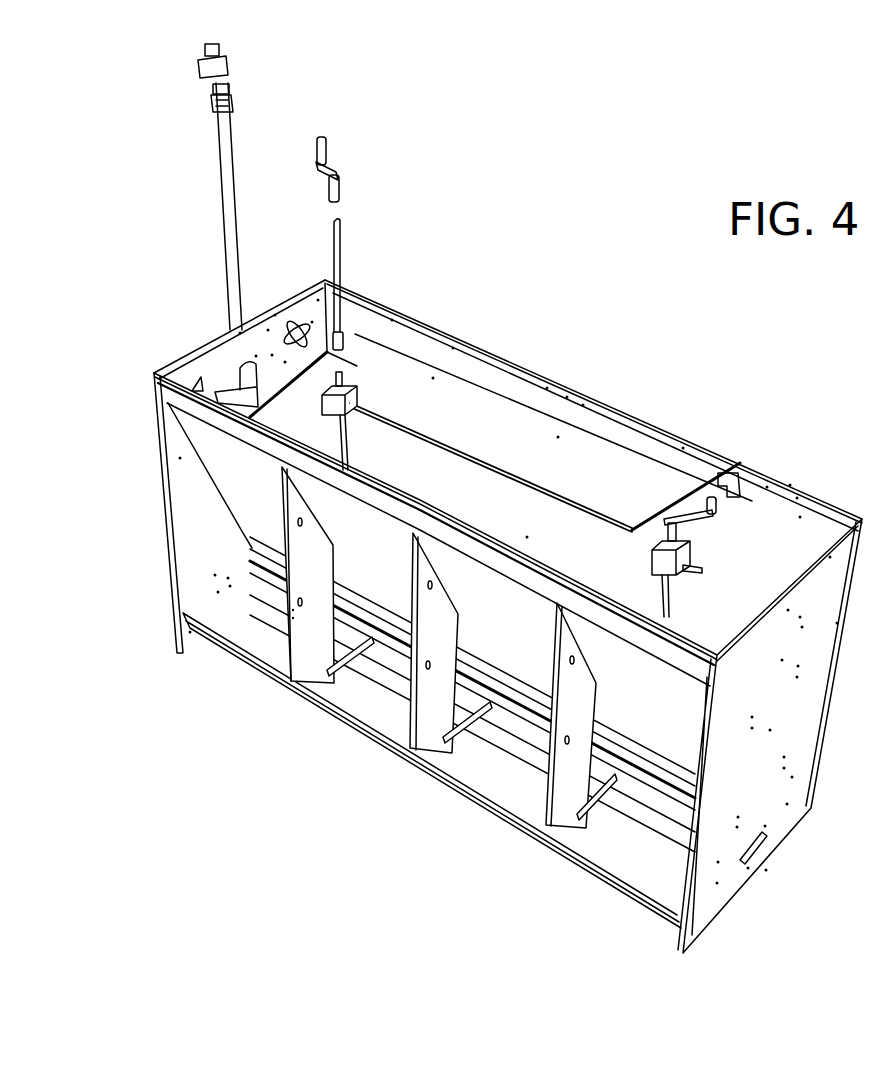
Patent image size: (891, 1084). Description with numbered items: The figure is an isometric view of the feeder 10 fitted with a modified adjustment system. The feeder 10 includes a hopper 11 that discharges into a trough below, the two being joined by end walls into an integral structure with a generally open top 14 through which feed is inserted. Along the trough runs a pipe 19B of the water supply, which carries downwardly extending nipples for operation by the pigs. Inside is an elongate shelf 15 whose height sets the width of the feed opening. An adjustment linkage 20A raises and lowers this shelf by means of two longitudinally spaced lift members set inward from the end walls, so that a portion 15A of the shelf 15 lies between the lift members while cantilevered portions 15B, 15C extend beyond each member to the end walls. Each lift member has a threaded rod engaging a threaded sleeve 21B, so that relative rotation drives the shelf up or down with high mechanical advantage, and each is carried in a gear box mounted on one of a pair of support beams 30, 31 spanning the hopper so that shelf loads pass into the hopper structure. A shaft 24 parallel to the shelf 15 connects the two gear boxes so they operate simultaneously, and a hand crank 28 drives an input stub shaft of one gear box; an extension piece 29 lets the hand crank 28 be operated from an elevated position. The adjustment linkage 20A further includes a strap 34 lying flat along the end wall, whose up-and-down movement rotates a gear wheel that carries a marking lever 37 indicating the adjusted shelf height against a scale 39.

The feeder 10 is at (656, 380).
The hopper 11 is at (228, 452).
The open top 14 is at (480, 420).
The shelf 15 is at (185, 590).
The portion of the shelf 15A is at (490, 730).
The cantilevered portion 15B is at (277, 583).
The cantilevered portion 15C is at (623, 770).
The pipe 19B is at (290, 683).
The adjustment linkage 20A is at (400, 405).
The threaded sleeve 21B is at (348, 440).
The shaft 24 is at (493, 462).
The hand crank 28 is at (345, 186).
The extension piece 29 is at (345, 266).
The support beam 30 is at (398, 302).
The support beam 31 is at (726, 482).
The strap 34 is at (258, 362).
The marking lever 37 is at (222, 388).
The scale 39 is at (222, 362).